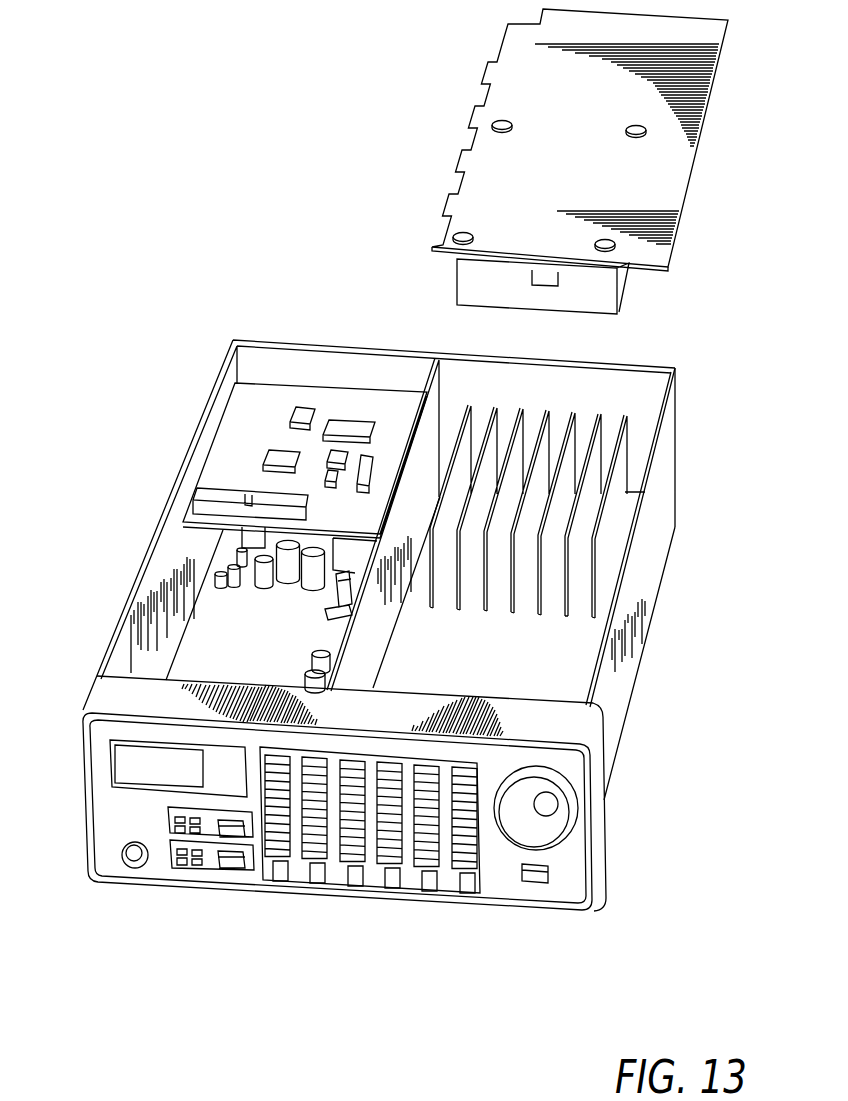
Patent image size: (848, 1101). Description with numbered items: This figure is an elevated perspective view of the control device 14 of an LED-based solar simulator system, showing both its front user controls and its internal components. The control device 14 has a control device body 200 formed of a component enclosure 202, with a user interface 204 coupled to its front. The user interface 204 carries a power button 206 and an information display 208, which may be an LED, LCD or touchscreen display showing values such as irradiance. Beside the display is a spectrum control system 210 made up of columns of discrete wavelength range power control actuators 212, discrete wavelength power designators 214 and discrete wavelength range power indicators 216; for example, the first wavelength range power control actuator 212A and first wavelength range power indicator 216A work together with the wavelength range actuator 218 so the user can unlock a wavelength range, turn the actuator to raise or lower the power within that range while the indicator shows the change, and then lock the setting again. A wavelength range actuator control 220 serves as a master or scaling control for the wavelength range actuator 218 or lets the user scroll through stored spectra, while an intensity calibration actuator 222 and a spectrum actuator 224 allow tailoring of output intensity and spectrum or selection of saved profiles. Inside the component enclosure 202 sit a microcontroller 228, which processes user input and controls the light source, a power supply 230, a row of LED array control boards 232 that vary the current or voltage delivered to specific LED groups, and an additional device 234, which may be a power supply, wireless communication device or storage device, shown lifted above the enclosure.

The control device 14 is at (222, 90).
The control device body 200 is at (217, 387).
The component enclosure 202 is at (658, 495).
The user interface 204 is at (168, 822).
The power button 206 is at (137, 860).
The information display 208 is at (127, 758).
The spectrum control system 210 is at (297, 873).
The discrete wavelength range power control actuator 212 is at (392, 868).
The first wavelength range power control actuator 212A is at (463, 878).
The discrete wavelength power designator 214 is at (450, 892).
The discrete wavelength range power indicator 216 is at (310, 847).
The first wavelength range power indicator 216A is at (460, 843).
The wavelength range actuator 218 is at (537, 833).
The wavelength range actuator control 220 is at (541, 873).
The intensity calibration actuator 222 is at (113, 815).
The spectrum actuator 224 is at (170, 860).
The microcontroller 228 is at (262, 412).
The power supply 230 is at (210, 605).
The LED array control board 232 is at (602, 522).
The additional device 234 is at (647, 192).